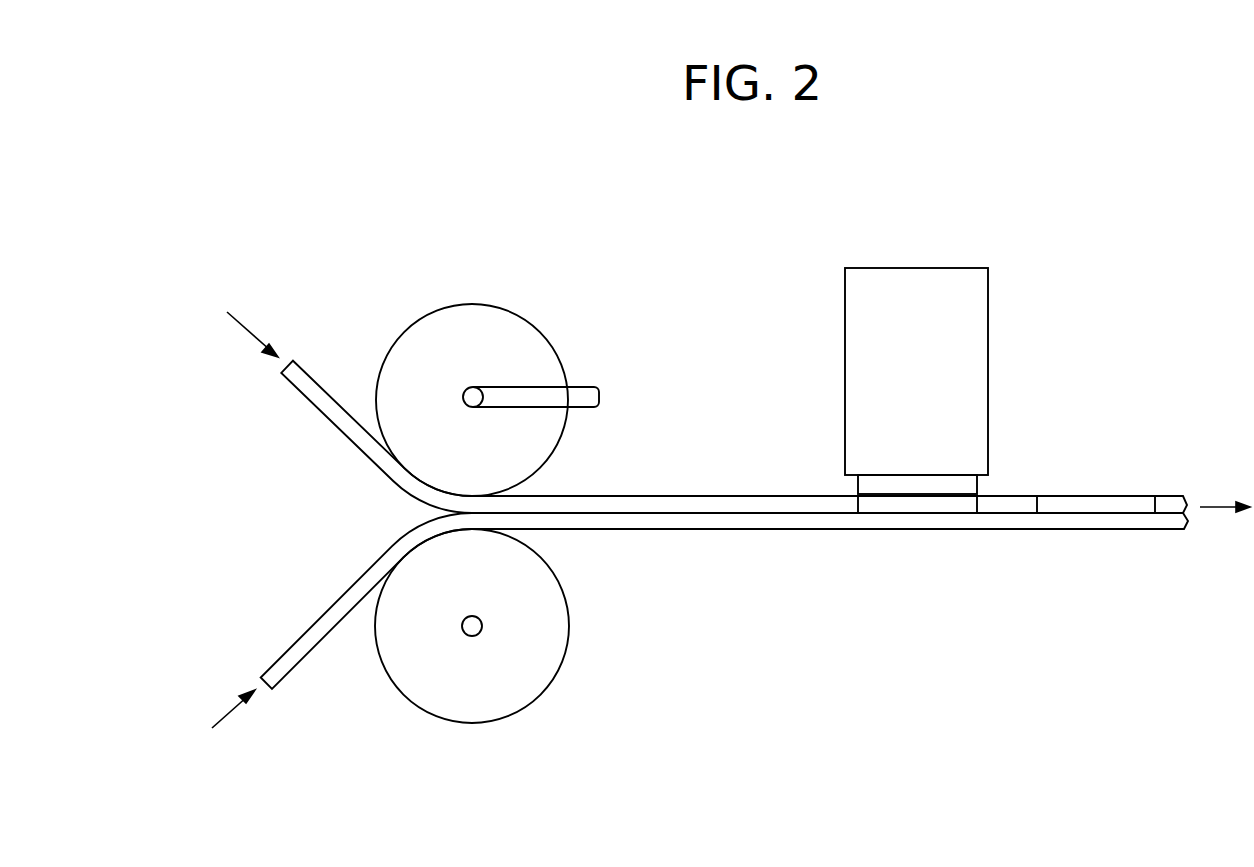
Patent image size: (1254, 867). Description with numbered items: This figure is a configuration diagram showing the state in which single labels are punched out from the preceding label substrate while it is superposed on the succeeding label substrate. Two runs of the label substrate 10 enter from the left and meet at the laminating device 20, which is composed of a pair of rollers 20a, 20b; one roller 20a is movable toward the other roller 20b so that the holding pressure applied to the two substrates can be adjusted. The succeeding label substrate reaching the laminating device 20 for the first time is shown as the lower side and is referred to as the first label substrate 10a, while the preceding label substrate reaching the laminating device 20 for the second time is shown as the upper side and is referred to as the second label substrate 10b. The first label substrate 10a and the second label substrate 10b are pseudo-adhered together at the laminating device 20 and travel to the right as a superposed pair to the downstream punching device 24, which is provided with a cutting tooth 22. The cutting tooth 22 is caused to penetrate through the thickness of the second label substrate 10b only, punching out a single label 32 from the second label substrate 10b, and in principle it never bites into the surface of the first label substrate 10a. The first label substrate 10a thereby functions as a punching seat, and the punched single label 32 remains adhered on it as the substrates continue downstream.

The label substrate 10 is at (332, 408).
The first label substrate 10a is at (692, 520).
The second label substrate 10b is at (688, 507).
The laminating device 20 is at (390, 327).
The roller 20a is at (467, 333).
The roller 20b is at (470, 687).
The cutting tooth 22 is at (915, 483).
The punching device 24 is at (873, 350).
The single label 32 is at (945, 505).